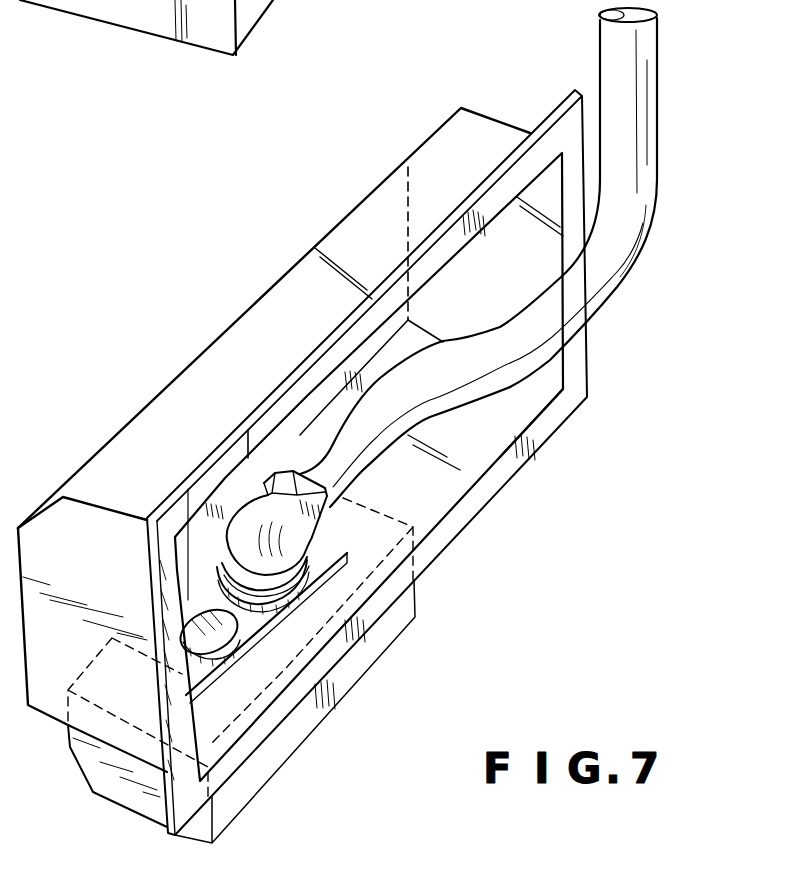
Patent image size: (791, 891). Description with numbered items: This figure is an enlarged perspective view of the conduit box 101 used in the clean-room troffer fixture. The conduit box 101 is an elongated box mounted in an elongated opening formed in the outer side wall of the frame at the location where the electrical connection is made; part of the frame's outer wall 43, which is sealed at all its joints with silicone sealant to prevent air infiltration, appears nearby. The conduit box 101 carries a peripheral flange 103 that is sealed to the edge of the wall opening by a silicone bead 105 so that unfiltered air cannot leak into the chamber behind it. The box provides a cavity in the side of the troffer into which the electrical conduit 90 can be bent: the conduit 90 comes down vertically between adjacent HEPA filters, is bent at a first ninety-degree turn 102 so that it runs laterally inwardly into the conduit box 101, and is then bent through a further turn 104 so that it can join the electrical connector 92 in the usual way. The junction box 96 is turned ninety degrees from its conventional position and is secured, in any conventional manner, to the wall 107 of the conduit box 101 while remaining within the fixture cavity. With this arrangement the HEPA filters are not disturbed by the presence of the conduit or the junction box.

The outer wall 43 is at (285, 0).
The conduit 90 is at (643, 123).
The electrical connector 92 is at (388, 527).
The junction box 96 is at (377, 667).
The conduit box 101 is at (477, 110).
The first 90° turn 102 is at (595, 315).
The peripheral flange 103 is at (548, 117).
The further turn 104 is at (407, 407).
The silicone bead 105 is at (225, 464).
The wall 107 is at (500, 460).